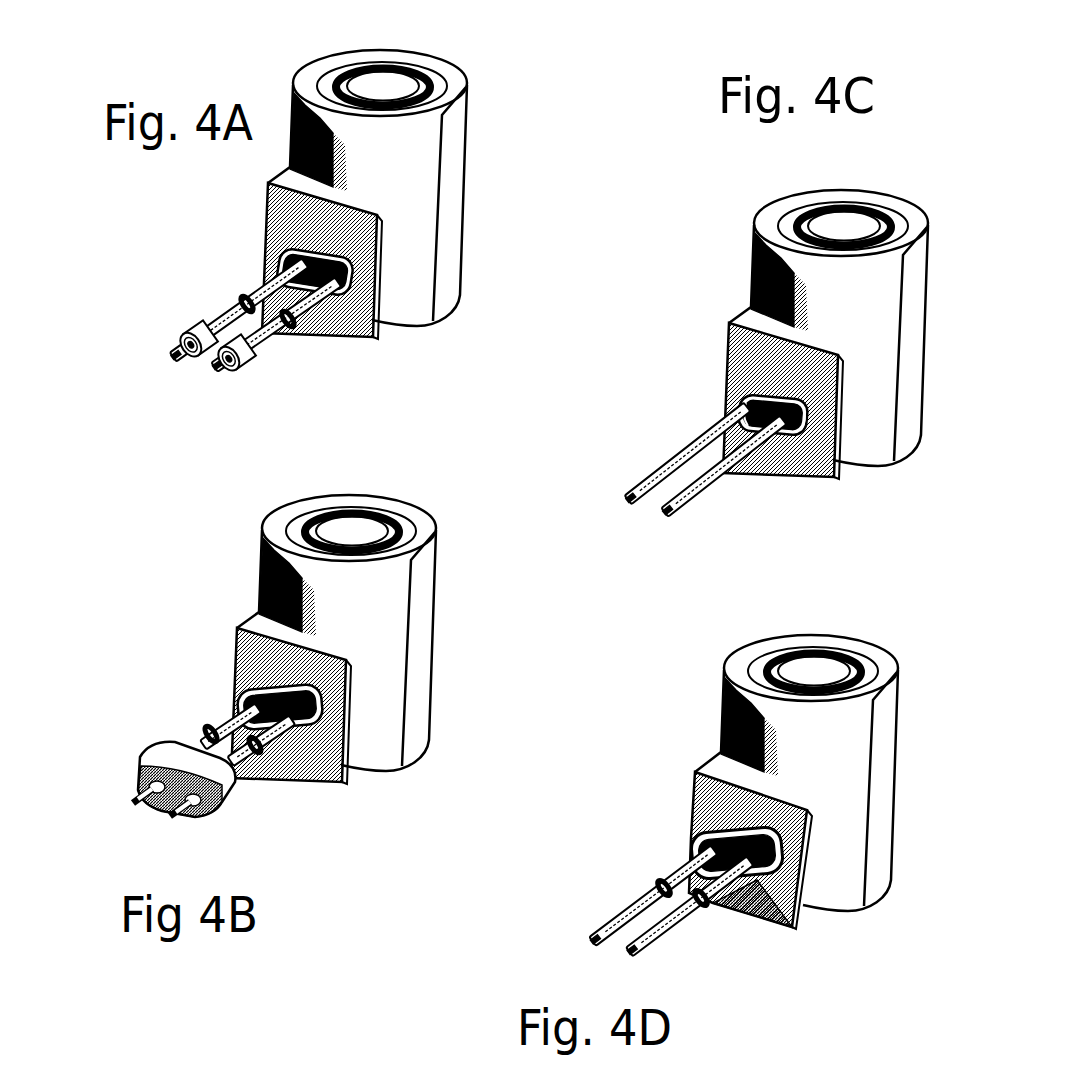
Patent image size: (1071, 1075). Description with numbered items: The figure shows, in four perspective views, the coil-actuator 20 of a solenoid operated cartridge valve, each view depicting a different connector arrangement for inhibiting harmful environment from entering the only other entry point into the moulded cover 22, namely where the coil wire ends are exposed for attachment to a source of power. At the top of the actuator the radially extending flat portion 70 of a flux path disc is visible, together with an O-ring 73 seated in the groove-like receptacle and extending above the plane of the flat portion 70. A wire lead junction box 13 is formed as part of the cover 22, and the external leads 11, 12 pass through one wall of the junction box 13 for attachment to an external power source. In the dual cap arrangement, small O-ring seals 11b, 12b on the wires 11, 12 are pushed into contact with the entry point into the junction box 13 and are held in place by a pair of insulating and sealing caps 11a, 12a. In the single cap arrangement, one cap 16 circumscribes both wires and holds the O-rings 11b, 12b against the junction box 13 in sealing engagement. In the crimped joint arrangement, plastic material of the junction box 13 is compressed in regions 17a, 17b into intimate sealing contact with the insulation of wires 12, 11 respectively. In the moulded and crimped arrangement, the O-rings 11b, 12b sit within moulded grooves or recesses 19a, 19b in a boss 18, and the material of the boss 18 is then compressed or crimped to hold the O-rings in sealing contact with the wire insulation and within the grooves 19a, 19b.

In FIG. 4A, the coil-actuator 20 is at (433, 184).
In FIG. 4C, the coil-actuator 20 is at (740, 335).
In FIG. 4B, the coil-actuator 20 is at (398, 640).
In FIG. 4D, the coil-actuator 20 is at (718, 779).
In FIG. 4A, the cover 22 is at (373, 163).
In FIG. 4C, the cover 22 is at (777, 293).
In FIG. 4B, the cover 22 is at (383, 640).
In FIG. 4D, the cover 22 is at (743, 740).
In FIG. 4A, the wire lead junction box 13 is at (377, 297).
In FIG. 4C, the wire lead junction box 13 is at (842, 445).
In FIG. 4B, the wire lead junction box 13 is at (350, 733).
In FIG. 4D, the wire lead junction box 13 is at (809, 858).
In FIG. 4A, the flat portion 70 is at (348, 70).
In FIG. 4C, the flat portion 70 is at (877, 218).
In FIG. 4B, the flat portion 70 is at (397, 527).
In FIG. 4D, the flat portion 70 is at (788, 658).
In FIG. 4A, the O-ring 73 is at (425, 87).
In FIG. 4C, the O-ring 73 is at (797, 223).
In FIG. 4B, the O-ring 73 is at (300, 522).
In FIG. 4D, the O-ring 73 is at (763, 675).
In FIG. 4A, the lead 12 is at (183, 358).
In FIG. 4C, the lead 12 is at (640, 490).
In FIG. 4B, the lead 12 is at (140, 790).
In FIG. 4D, the lead 12 is at (602, 930).
In FIG. 4A, the lead 11 is at (225, 362).
In FIG. 4C, the lead 11 is at (690, 503).
In FIG. 4B, the lead 11 is at (182, 810).
In FIG. 4D, the lead 11 is at (647, 948).
In FIG. 4A, the insulating and sealing cap 12a is at (190, 315).
In FIG. 4A, the insulating and sealing cap 11a is at (250, 350).
In FIG. 4A, the O-ring seal 12b is at (240, 289).
In FIG. 4B, the O-ring seal 12b is at (205, 731).
In FIG. 4D, the O-ring seal 12b is at (652, 887).
In FIG. 4A, the O-ring seal 11b is at (290, 322).
In FIG. 4B, the O-ring seal 11b is at (263, 767).
In FIG. 4D, the O-ring seal 11b is at (708, 910).
In FIG. 4B, the single cap 16 is at (225, 785).
In FIG. 4C, the crimped joint region 17a is at (750, 413).
In FIG. 4C, the crimped joint region 17b is at (790, 427).
In FIG. 4D, the boss 18 is at (717, 833).
In FIG. 4D, the moulded groove 19a is at (792, 927).
In FIG. 4D, the moulded groove 19b is at (690, 847).